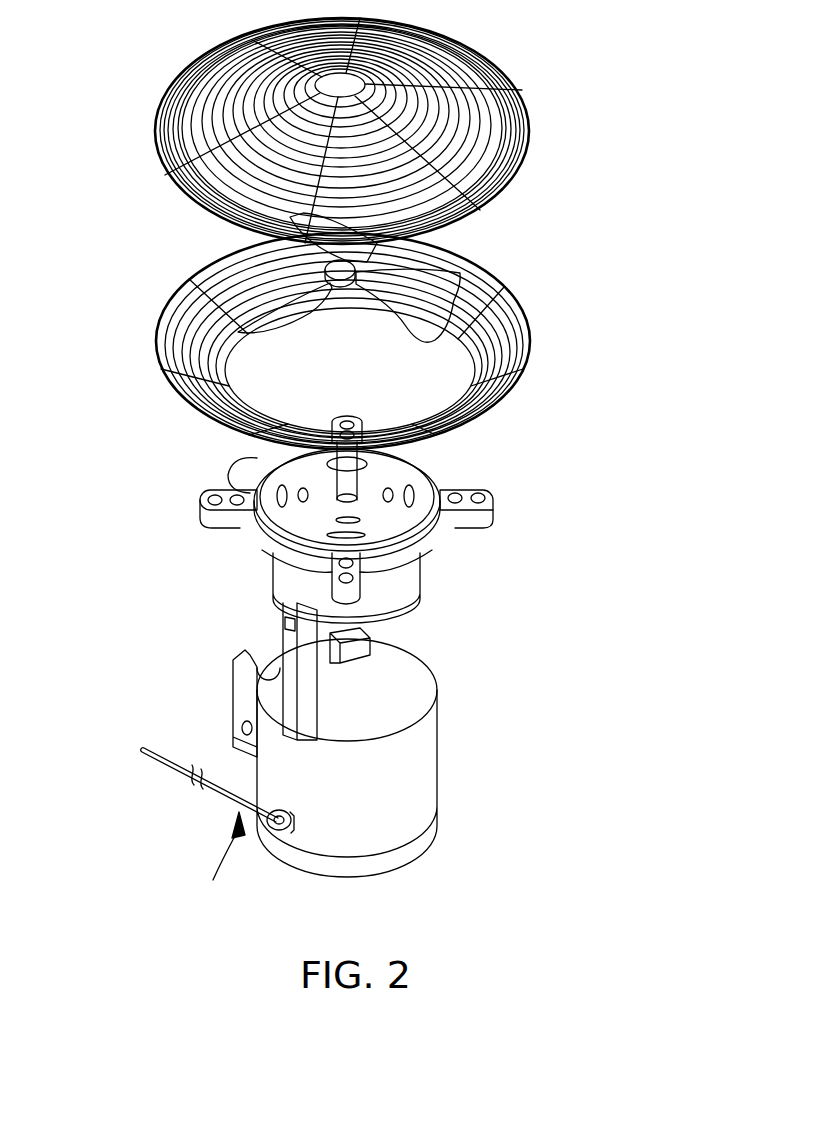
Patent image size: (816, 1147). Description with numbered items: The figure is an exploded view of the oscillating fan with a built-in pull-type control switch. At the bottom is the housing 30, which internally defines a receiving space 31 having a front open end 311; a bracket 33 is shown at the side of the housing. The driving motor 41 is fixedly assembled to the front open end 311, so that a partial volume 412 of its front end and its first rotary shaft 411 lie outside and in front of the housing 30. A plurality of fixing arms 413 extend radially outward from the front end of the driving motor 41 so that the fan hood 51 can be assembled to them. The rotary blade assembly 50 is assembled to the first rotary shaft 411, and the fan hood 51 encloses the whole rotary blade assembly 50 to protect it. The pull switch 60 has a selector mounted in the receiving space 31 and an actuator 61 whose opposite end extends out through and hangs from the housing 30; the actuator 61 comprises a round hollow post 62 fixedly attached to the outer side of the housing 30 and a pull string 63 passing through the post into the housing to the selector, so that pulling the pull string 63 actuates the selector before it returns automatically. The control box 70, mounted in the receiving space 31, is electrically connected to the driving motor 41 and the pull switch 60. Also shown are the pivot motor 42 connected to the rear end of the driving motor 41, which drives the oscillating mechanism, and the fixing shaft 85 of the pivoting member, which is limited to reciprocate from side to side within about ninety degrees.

The housing 30 is at (332, 758).
The receiving space 31 is at (403, 698).
The front open end 311 is at (435, 672).
The side bracket 33 is at (233, 697).
The driving motor 41 is at (307, 512).
The first rotary shaft 411 is at (330, 462).
The partial volume 412 is at (490, 463).
The fixing arms 413 is at (200, 498).
The pivot motor 42 is at (283, 638).
The rotary blade assembly 50 is at (237, 333).
The fan hood 51 is at (500, 397).
The pull switch 60 is at (214, 865).
The actuator 61 is at (221, 867).
The round hollow post 62 is at (283, 833).
The pull string 63 is at (208, 800).
The control box 70 is at (372, 640).
The fixing shaft 85 is at (227, 470).